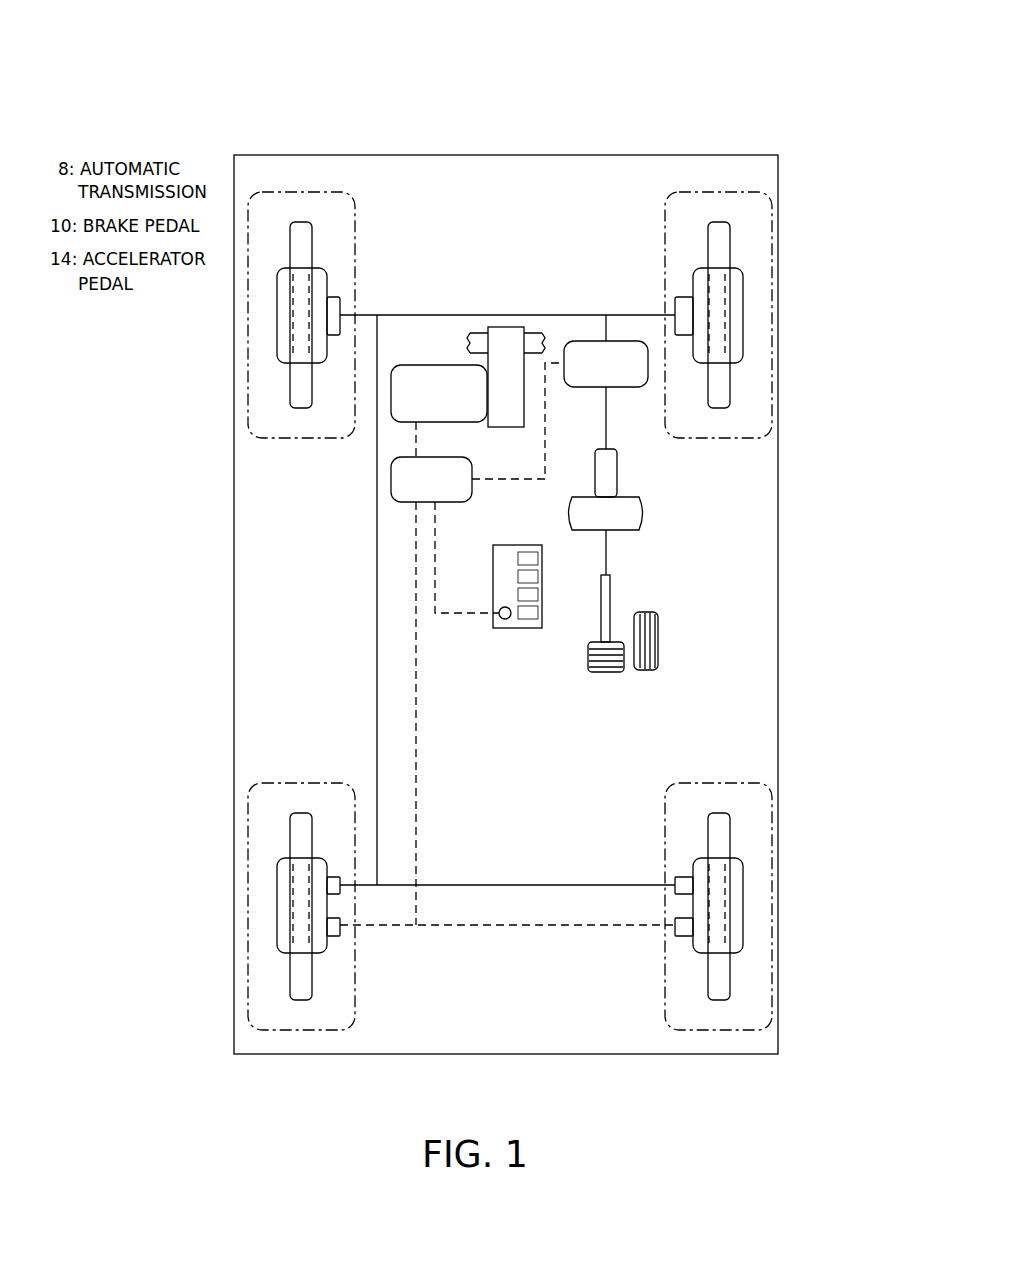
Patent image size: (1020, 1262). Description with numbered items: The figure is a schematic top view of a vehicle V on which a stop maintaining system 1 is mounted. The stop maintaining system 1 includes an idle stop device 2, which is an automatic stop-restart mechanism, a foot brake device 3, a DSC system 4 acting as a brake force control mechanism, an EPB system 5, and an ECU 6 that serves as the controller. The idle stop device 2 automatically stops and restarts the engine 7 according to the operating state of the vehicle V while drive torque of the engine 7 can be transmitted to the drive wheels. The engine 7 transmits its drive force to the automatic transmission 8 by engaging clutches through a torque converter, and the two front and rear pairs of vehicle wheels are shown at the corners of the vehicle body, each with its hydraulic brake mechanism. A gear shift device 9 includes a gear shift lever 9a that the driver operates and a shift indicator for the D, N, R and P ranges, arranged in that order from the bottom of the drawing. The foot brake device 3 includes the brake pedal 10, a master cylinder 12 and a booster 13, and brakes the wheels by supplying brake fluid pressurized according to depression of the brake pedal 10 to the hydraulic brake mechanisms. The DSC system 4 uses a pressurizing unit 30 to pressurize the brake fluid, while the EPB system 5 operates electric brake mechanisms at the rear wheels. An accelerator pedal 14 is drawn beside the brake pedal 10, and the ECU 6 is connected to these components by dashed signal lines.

The vehicle V is at (601, 75).
The stop maintaining system 1 is at (626, 130).
The idle stop device 2 is at (372, 452).
The foot brake device 3 is at (637, 516).
The DSC system 4 is at (577, 337).
The EPB system 5 is at (401, 970).
The ECU 6 is at (450, 502).
The engine 7 is at (420, 365).
The automatic transmission 8 is at (500, 428).
The gear shift device 9 is at (507, 557).
The gear shift lever 9a is at (499, 608).
The brake pedal 10 is at (588, 652).
The master cylinder 12 is at (617, 472).
The booster 13 is at (622, 530).
The accelerator pedal 14 is at (658, 640).
The pressurizing unit 30 is at (620, 388).